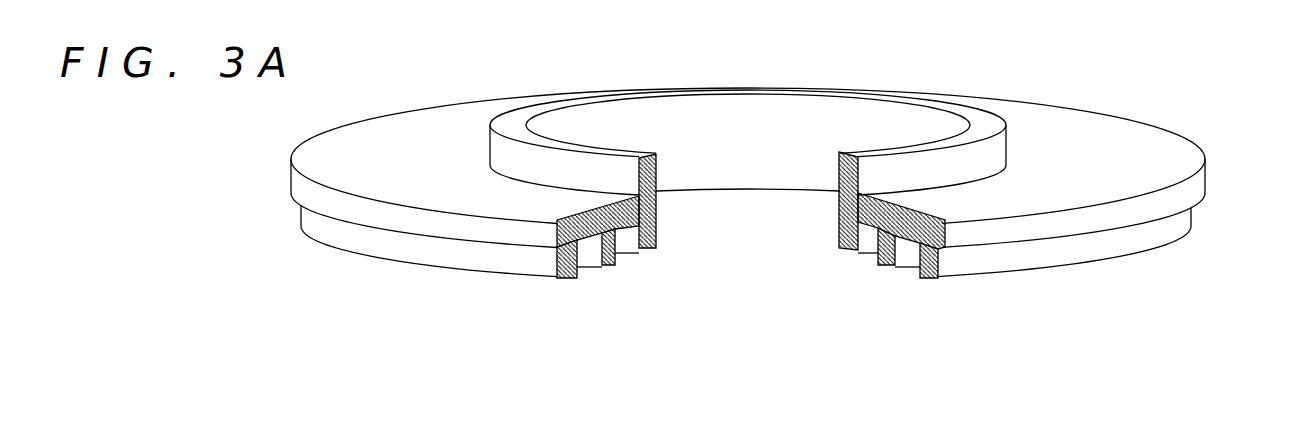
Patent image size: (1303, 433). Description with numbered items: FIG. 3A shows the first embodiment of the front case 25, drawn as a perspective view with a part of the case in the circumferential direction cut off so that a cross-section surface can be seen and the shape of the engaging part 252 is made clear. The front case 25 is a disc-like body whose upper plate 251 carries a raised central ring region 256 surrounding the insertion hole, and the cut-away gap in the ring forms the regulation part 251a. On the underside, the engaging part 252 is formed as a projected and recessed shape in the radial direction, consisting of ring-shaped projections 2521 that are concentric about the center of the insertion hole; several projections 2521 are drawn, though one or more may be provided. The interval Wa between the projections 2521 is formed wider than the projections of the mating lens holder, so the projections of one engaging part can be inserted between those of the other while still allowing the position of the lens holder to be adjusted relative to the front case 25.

The front case 25 is at (372, 318).
The holding plate 251 is at (1100, 165).
The regulation part 251a is at (888, 298).
The engaging part 252 is at (774, 347).
The projections 2521 is at (649, 251).
The central holding surface 256 is at (787, 110).
The interval Wa is at (598, 269).